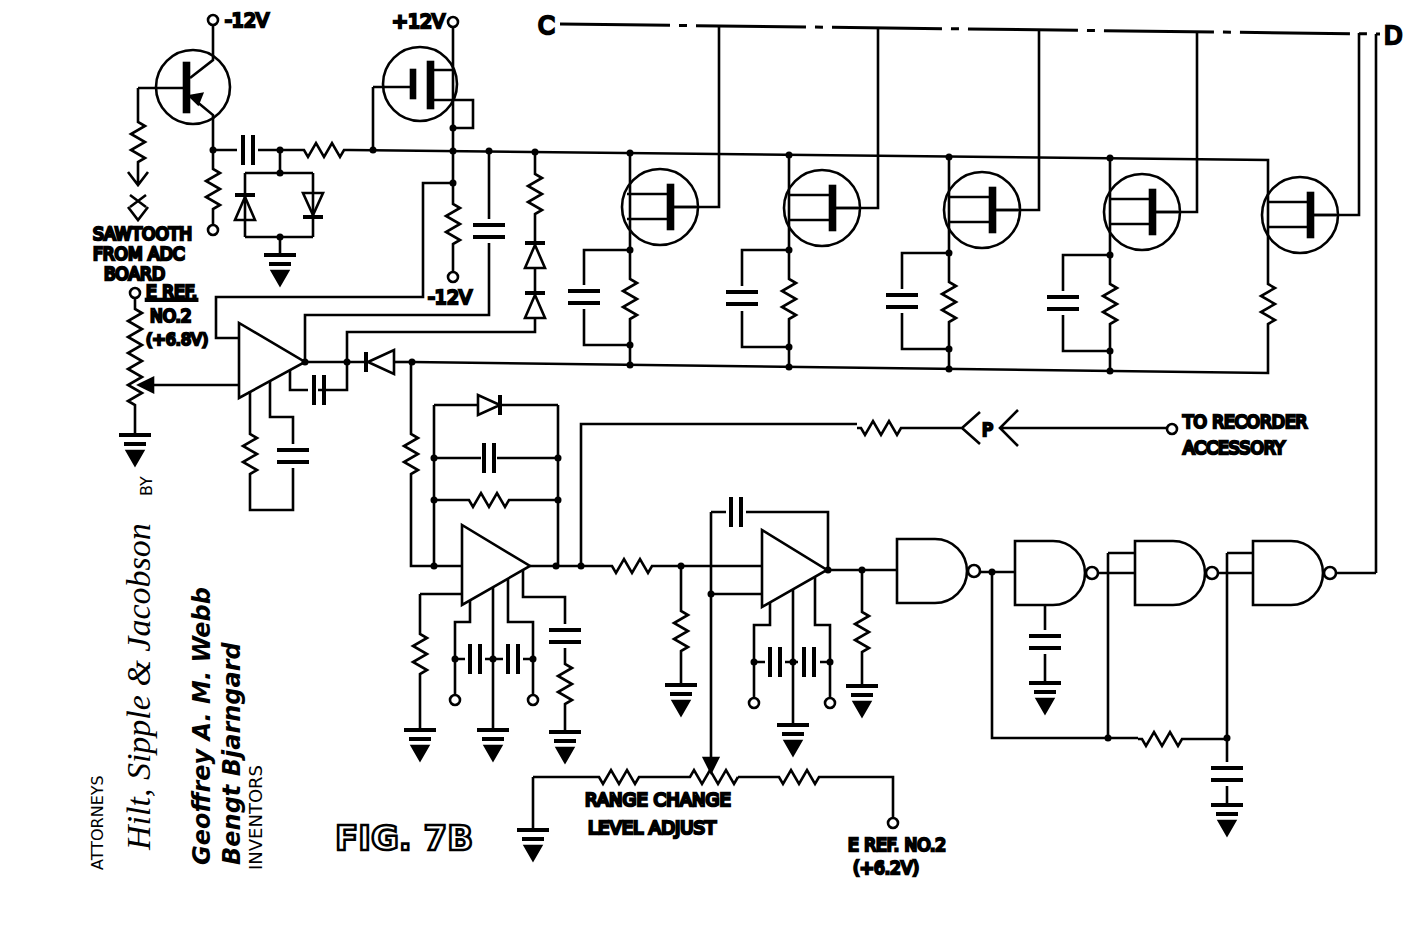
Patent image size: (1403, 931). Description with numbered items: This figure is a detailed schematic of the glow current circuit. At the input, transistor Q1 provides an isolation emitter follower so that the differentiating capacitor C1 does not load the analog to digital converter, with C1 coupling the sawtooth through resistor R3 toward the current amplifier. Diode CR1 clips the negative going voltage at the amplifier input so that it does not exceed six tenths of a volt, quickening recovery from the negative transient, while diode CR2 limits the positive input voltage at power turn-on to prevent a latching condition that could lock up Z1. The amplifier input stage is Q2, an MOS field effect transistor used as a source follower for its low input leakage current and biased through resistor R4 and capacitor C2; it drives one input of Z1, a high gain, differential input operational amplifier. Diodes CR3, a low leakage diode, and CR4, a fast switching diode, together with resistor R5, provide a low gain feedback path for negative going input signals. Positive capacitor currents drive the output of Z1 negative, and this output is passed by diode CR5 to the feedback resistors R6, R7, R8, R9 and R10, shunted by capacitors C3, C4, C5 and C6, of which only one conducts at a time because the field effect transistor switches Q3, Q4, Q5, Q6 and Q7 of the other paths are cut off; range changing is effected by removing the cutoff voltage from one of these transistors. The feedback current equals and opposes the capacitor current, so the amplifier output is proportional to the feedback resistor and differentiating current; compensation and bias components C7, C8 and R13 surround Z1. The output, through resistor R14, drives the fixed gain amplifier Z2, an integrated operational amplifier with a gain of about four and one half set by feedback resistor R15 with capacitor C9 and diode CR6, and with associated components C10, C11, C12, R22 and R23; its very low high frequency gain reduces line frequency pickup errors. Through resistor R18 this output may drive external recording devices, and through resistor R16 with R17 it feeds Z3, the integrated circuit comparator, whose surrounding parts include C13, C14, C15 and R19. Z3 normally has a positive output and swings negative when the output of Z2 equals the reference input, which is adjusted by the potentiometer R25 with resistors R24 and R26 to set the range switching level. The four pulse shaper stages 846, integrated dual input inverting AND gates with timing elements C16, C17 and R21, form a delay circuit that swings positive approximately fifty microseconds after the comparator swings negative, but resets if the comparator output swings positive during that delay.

The isolation emitter follower Q1 is at (215, 85).
The amplifier input stage MOS field effect transistor Q2 is at (392, 62).
The field effect transistor switch Q3 is at (670, 246).
The field effect transistor switch Q4 is at (833, 247).
The field effect transistor switch Q5 is at (990, 248).
The field effect transistor switch Q6 is at (1153, 250).
The field effect transistor switch Q7 is at (1310, 252).
The differentiating capacitor C1 is at (252, 136).
The capacitor C2 is at (492, 241).
The capacitor C3 is at (594, 290).
The capacitor C4 is at (734, 316).
The capacitor C5 is at (894, 318).
The capacitor C6 is at (1056, 320).
The capacitor C7 is at (324, 410).
The capacitor C8 is at (305, 463).
The capacitor C9 is at (500, 455).
The capacitor C10 is at (573, 628).
The capacitor C11 is at (485, 678).
The capacitor C12 is at (520, 678).
The capacitor C13 is at (732, 497).
The capacitor C14 is at (784, 681).
The capacitor C15 is at (817, 681).
The capacitor C16 is at (1058, 648).
The capacitor C17 is at (1246, 780).
The resistor R3 is at (325, 141).
The resistor R4 is at (459, 226).
The resistor R5 is at (541, 211).
The resistor R6 is at (642, 300).
The resistor R7 is at (800, 302).
The resistor R8 is at (960, 302).
The resistor R9 is at (1122, 304).
The resistor R10 is at (1280, 310).
The resistor R13 is at (248, 455).
The resistor R14 is at (410, 456).
The resistor R15 is at (497, 497).
The resistor R16 is at (633, 551).
The resistor R17 is at (672, 634).
The resistor R18 is at (882, 421).
The resistor R19 is at (872, 637).
The resistor R21 is at (1160, 732).
The resistor R22 is at (410, 651).
The resistor R23 is at (574, 690).
The resistor R24 is at (612, 768).
The potentiometer (range change level adjust) R25 is at (728, 768).
The resistor R26 is at (820, 768).
The negative clipping diode CR1 is at (241, 226).
The positive limiting diode CR2 is at (321, 201).
The low leakage diode CR3 is at (541, 313).
The fast switching diode CR4 is at (546, 256).
The output diode CR5 is at (385, 377).
The diode CR6 is at (505, 402).
The operational amplifier Z1 is at (266, 343).
The fixed gain amplifier Z2 is at (498, 555).
The integrated circuit comparator Z3 is at (794, 558).
The pulse shaper 846 is at (1116, 572).